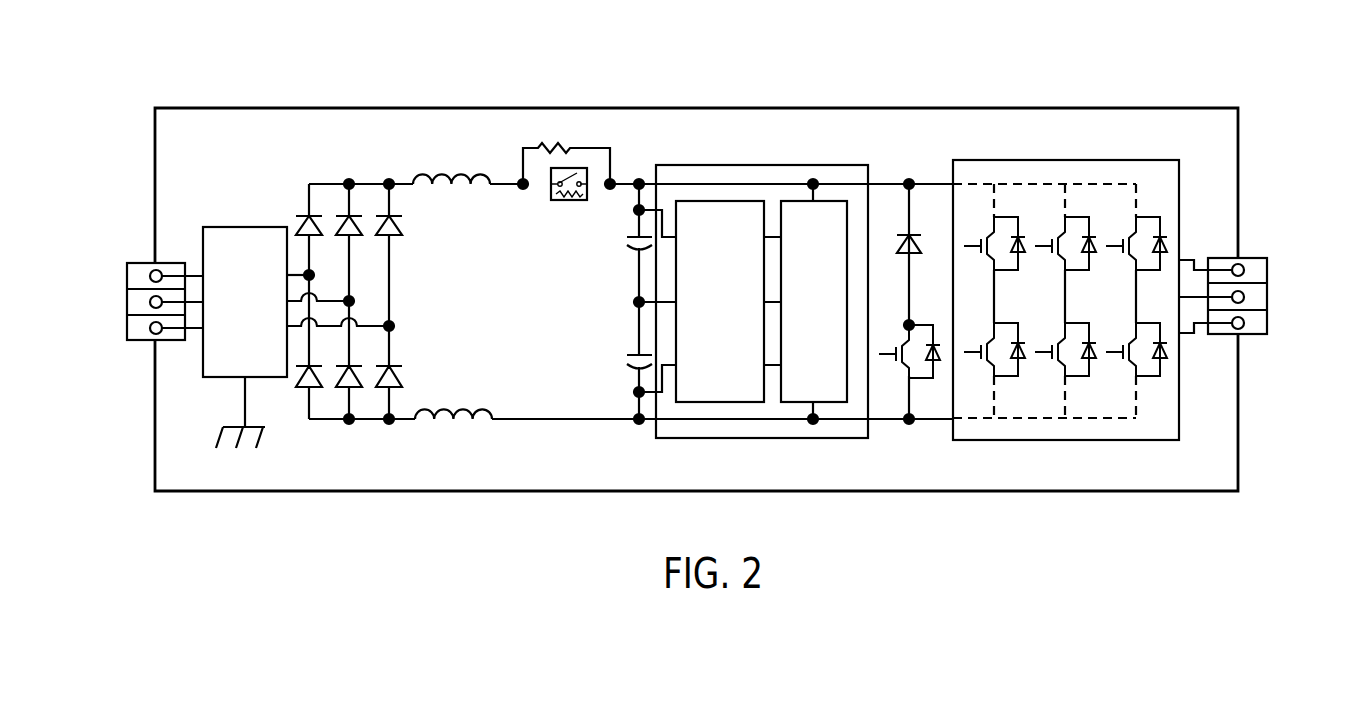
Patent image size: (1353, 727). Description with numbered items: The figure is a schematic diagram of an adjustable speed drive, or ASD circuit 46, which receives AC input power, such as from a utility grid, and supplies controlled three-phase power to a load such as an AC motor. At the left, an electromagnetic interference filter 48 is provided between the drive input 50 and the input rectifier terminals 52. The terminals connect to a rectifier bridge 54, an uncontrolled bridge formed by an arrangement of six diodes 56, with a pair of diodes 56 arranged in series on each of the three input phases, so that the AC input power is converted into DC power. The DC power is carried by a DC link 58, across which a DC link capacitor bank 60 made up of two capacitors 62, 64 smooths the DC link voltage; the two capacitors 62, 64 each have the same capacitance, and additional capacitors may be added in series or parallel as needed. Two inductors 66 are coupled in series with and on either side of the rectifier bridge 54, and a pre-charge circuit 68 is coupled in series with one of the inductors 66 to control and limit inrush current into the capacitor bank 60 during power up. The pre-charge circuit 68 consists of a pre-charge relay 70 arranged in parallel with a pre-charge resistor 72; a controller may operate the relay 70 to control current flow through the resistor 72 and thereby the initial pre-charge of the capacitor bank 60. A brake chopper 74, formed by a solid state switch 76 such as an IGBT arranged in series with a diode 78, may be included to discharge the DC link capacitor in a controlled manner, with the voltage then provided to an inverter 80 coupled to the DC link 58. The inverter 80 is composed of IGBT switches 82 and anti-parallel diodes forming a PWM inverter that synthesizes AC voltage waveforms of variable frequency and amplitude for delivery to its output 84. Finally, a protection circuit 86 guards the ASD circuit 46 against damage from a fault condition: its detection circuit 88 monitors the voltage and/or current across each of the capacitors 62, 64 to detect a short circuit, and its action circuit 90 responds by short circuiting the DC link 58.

The ASD circuit 46 is at (918, 73).
The electromagnetic interference filter 48 is at (245, 227).
The drive input 50 is at (172, 263).
The input rectifier terminals 52 is at (315, 275).
The rectifier bridge 54 is at (366, 157).
The diodes 56 is at (351, 238).
The DC link 58 is at (565, 420).
The DC link capacitor bank 60 is at (582, 301).
The capacitor 62 is at (632, 245).
The capacitor 64 is at (630, 362).
The inductors 66 is at (445, 172).
The pre-charge circuit 68 is at (609, 164).
The pre-charge relay 70 is at (551, 198).
The pre-charge resistor 72 is at (553, 145).
The brake chopper 74 is at (909, 307).
The solid state switch 76 is at (896, 344).
The diode 78 is at (897, 245).
The inverter 80 is at (1080, 279).
The IGBT switches 82 is at (1000, 217).
The output 84 is at (1250, 258).
The protection circuit 86 is at (753, 263).
The detection circuit 88 is at (720, 201).
The action circuit 90 is at (793, 402).